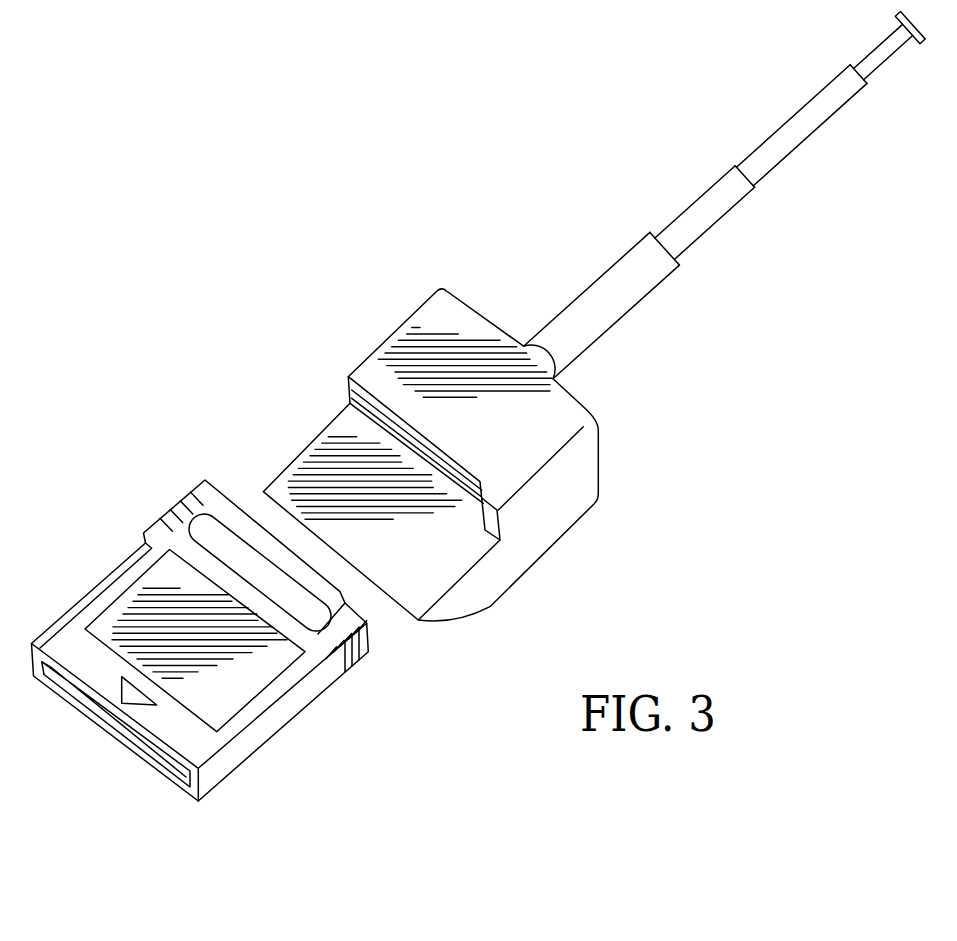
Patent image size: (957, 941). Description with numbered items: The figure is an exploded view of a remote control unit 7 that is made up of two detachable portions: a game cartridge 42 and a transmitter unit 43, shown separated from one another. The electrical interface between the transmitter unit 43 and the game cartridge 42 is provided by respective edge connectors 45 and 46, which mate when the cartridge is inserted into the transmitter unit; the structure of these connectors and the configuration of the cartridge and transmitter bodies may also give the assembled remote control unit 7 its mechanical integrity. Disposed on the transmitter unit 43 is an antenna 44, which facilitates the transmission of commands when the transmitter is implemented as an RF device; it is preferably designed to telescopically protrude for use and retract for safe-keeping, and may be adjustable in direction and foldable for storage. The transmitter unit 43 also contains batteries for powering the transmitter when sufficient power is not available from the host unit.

The remote control unit 7 is at (183, 297).
The game cartridge 42 is at (177, 510).
The transmitter unit 43 is at (458, 310).
The antenna 44 is at (617, 310).
The edge connector 45 is at (343, 401).
The edge connector 46 is at (241, 496).